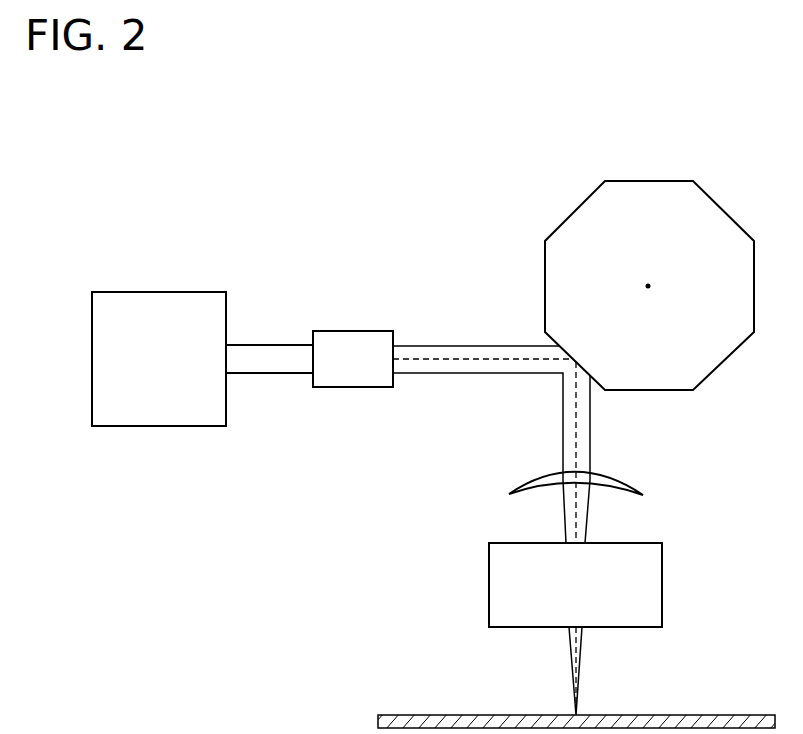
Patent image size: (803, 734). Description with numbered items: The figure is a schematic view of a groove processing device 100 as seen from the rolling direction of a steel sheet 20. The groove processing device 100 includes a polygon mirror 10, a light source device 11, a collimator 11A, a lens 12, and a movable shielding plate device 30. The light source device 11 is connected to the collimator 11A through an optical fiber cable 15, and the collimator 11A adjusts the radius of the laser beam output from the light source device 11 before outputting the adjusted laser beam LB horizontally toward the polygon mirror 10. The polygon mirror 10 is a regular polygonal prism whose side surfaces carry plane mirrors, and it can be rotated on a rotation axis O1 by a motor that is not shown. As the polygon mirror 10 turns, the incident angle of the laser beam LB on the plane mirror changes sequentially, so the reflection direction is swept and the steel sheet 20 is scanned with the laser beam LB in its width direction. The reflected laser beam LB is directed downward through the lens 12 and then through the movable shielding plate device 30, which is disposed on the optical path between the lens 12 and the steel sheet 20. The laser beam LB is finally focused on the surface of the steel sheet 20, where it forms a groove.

The groove processing device 100 is at (540, 116).
The polygon mirror 10 is at (713, 198).
The rotation axis O1 is at (666, 287).
The light source device 11 is at (193, 292).
The optical fiber cable 15 is at (281, 345).
The collimator 11A is at (372, 331).
The laser beam LB is at (494, 346).
The lens 12 is at (643, 491).
The movable shielding plate device 30 is at (662, 557).
The steel sheet 20 is at (737, 715).